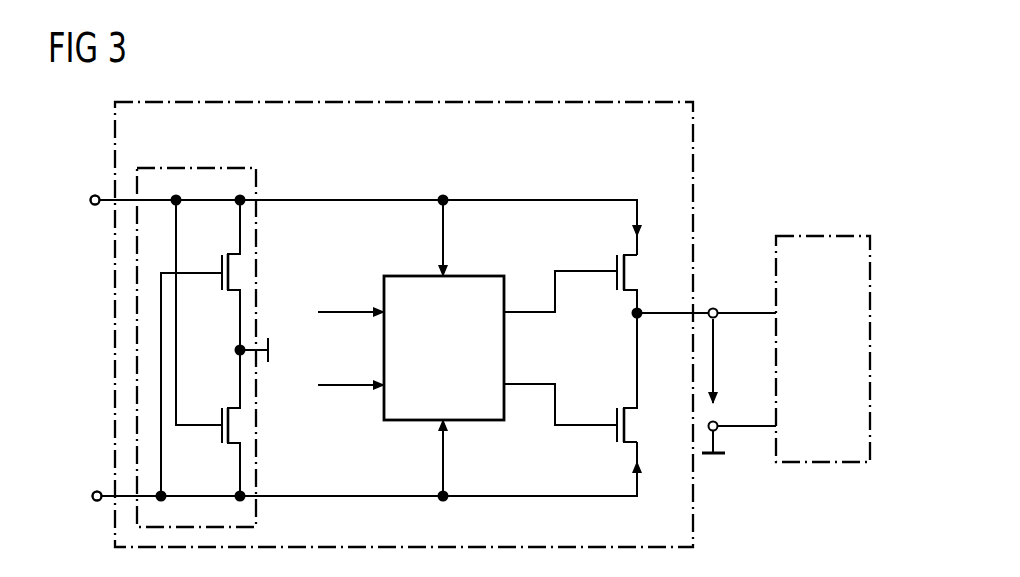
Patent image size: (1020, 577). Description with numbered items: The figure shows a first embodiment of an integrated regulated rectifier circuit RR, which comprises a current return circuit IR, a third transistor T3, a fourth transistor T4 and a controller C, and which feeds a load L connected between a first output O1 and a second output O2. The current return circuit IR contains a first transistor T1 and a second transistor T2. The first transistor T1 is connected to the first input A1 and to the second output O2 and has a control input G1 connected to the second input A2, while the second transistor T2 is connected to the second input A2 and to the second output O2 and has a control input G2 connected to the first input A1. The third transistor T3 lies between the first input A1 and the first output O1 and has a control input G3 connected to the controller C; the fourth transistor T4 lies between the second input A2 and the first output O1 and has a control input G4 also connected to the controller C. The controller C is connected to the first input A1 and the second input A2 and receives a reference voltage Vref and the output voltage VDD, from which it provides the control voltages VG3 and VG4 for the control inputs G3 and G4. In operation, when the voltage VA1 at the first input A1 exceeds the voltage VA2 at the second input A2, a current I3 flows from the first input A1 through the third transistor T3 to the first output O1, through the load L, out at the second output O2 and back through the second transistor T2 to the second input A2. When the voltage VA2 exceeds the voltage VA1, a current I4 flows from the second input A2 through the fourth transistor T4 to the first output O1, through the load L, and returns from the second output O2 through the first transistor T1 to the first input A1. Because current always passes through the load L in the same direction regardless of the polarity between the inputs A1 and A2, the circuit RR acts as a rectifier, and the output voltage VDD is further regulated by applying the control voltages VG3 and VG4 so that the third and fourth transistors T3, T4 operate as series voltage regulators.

The integrated regulated rectifier circuit RR is at (694, 136).
The current return circuit IR is at (193, 168).
The load L is at (822, 236).
The voltage at the first input VA1 is at (342, 221).
The voltage at the second input VA2 is at (342, 476).
The first input A1 is at (96, 195).
The second input A2 is at (97, 501).
The first transistor T1 is at (234, 266).
The second transistor T2 is at (234, 420).
The control input of the first transistor G1 is at (191, 369).
The control input of the second transistor G2 is at (199, 312).
The second output O2 is at (270, 345).
The first output O1 is at (706, 301).
The controller C is at (470, 276).
The output voltage VDD is at (540, 343).
The reference voltage Vref is at (351, 371).
The control voltage for the third transistor VG3 is at (560, 278).
The control voltage for the fourth transistor VG4 is at (560, 404).
The control input of the third transistor G3 is at (600, 279).
The control input of the fourth transistor G4 is at (600, 431).
The third transistor T3 is at (630, 270).
The fourth transistor T4 is at (630, 426).
The current through the third transistor I3 is at (656, 229).
The current through the fourth transistor I4 is at (656, 471).